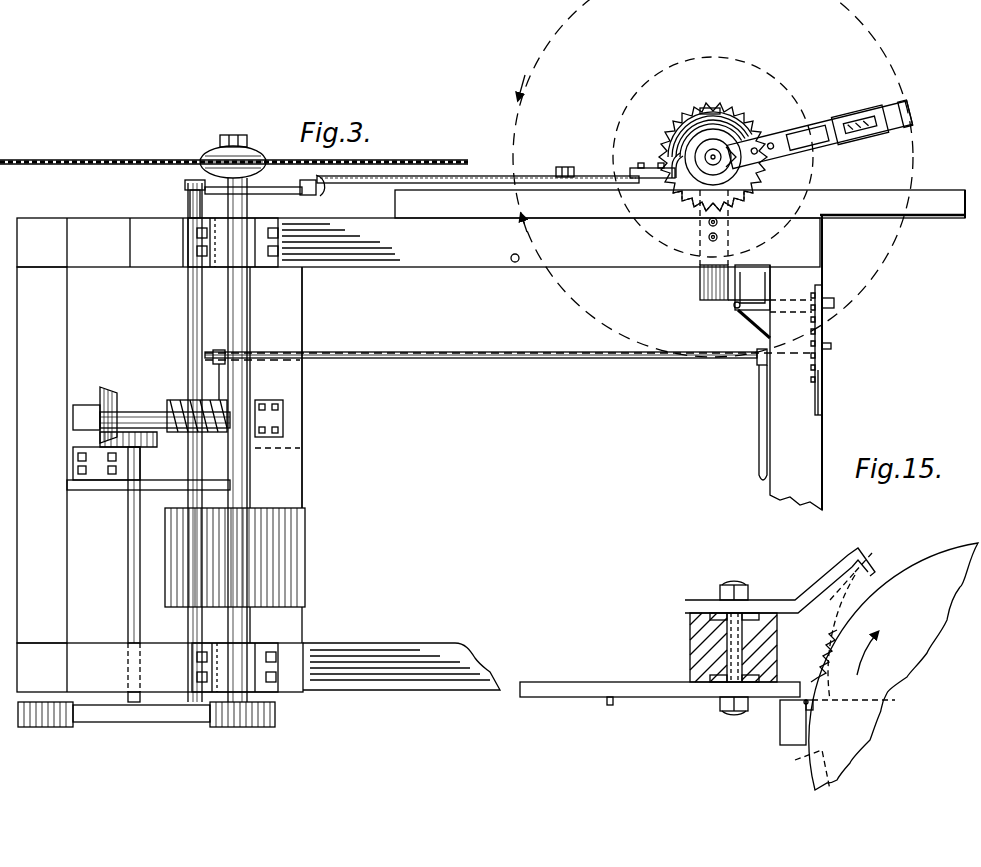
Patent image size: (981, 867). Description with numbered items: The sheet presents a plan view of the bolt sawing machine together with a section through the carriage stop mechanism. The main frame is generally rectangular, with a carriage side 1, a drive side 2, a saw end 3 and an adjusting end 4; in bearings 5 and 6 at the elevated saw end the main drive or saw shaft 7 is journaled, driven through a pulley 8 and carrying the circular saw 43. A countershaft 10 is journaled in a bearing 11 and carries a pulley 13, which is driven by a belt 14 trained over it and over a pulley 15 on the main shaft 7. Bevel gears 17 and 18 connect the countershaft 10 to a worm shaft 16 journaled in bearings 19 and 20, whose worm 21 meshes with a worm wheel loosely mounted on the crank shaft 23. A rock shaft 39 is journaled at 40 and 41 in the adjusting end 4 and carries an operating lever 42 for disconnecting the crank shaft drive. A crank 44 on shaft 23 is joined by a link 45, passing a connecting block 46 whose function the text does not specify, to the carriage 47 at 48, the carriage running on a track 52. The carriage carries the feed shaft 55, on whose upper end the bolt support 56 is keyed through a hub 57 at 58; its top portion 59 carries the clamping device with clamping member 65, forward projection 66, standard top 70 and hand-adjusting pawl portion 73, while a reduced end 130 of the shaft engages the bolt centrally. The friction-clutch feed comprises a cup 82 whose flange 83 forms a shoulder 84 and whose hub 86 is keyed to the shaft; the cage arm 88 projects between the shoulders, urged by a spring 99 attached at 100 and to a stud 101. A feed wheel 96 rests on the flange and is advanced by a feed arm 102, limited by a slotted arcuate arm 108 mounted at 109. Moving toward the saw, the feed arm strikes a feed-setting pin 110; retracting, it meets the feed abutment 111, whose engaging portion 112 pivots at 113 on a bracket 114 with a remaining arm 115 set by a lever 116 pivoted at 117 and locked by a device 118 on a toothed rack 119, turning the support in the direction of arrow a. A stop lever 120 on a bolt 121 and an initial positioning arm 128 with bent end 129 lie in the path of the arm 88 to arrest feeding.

In FIG. 3, the carriage side 1 is at (478, 262).
In FIG. 3, the drive side 2 is at (400, 640).
In FIG. 3, the saw end 3 is at (290, 488).
In FIG. 3, the adjusting end 4 is at (822, 442).
In FIG. 3, the bearing 5 is at (250, 266).
In FIG. 3, the bearing 6 is at (257, 650).
In FIG. 3, the main drive or saw shaft 7 is at (247, 315).
In FIG. 3, the pulley 8 is at (298, 543).
In FIG. 3, the countershaft 10 is at (127, 538).
In FIG. 3, the bearing 11 is at (215, 387).
In FIG. 3, the pulley 13 is at (158, 722).
In FIG. 3, the belt 14 is at (185, 722).
In FIG. 3, the pulley 15 is at (256, 722).
In FIG. 3, the worm shaft 16 is at (118, 398).
In FIG. 3, the bevel gear 17 is at (150, 440).
In FIG. 3, the bevel gear 18 is at (105, 392).
In FIG. 3, the bearing 19 is at (73, 415).
In FIG. 3, the bearing 20 is at (283, 412).
In FIG. 3, the worm 21 is at (180, 398).
In FIG. 3, the carriage-actuating or crank shaft 23 is at (188, 314).
In FIG. 3, the rock shaft 39 is at (520, 358).
In FIG. 3, the journal 40 is at (758, 368).
In FIG. 3, the journal 41 is at (300, 353).
In FIG. 3, the operating lever 42 is at (758, 425).
In FIG. 3, the circular saw 43 is at (148, 160).
In FIG. 3, the crank 44 is at (236, 199).
In FIG. 3, the link 45 is at (380, 183).
In FIG. 3, the block 46 is at (317, 193).
In FIG. 3, the carriage 47 is at (922, 185).
In FIG. 15, the carriage 47 is at (690, 625).
In FIG. 3, the link connection 48 is at (560, 167).
In FIG. 3, the carriage track 52 is at (930, 205).
In FIG. 3, the feed shaft 55 is at (682, 152).
In FIG. 3, the bolt support 56 is at (755, 126).
In FIG. 3, the hub 57 is at (722, 172).
In FIG. 3, the key 58 is at (738, 165).
In FIG. 3, the bolt-supporting top portion 59 is at (819, 124).
In FIG. 3, the bolt-clamping member 65 is at (905, 113).
In FIG. 3, the forward projection 66 is at (807, 137).
In FIG. 3, the top of the standard 70 is at (859, 125).
In FIG. 3, the pawl portion 73 is at (859, 124).
In FIG. 15, the cup 82 is at (950, 556).
In FIG. 15, the flange 83 is at (805, 752).
In FIG. 15, the clutch-limiting shoulder 84 is at (886, 698).
In FIG. 15, the hub 86 is at (780, 720).
In FIG. 15, the arm 88 is at (852, 565).
In FIG. 3, the feed wheel 96 is at (690, 128).
In FIG. 15, the spring 99 is at (857, 676).
In FIG. 15, the spring connection 100 is at (812, 702).
In FIG. 15, the stud 101 is at (835, 631).
In FIG. 3, the feed arm 102 is at (700, 275).
In FIG. 3, the slotted arcuate arm 108 is at (712, 108).
In FIG. 3, the mounting 109 is at (662, 166).
In FIG. 3, the arrester or feed-setting pin 110 is at (514, 262).
In FIG. 3, the feed abutment 111 is at (738, 312).
In FIG. 3, the feed arm-engaging portion 112 is at (748, 270).
In FIG. 3, the pivot 113 is at (760, 292).
In FIG. 3, the bracket 114 is at (772, 312).
In FIG. 3, the remaining arm 115 is at (745, 320).
In FIG. 3, the lever 116 is at (826, 326).
In FIG. 3, the pivot 117 is at (834, 303).
In FIG. 3, the locking device 118 is at (832, 346).
In FIG. 3, the toothed rack 119 is at (816, 372).
In FIG. 15, the stop lever 120 is at (650, 688).
In FIG. 15, the bolt 121 is at (730, 648).
In FIG. 15, the initial positioning arm 128 is at (770, 600).
In FIG. 15, the bent terminal end 129 is at (870, 570).
In FIG. 3, the reduced end 130 is at (690, 188).
In FIG. 3, the arrow a is at (824, 78).